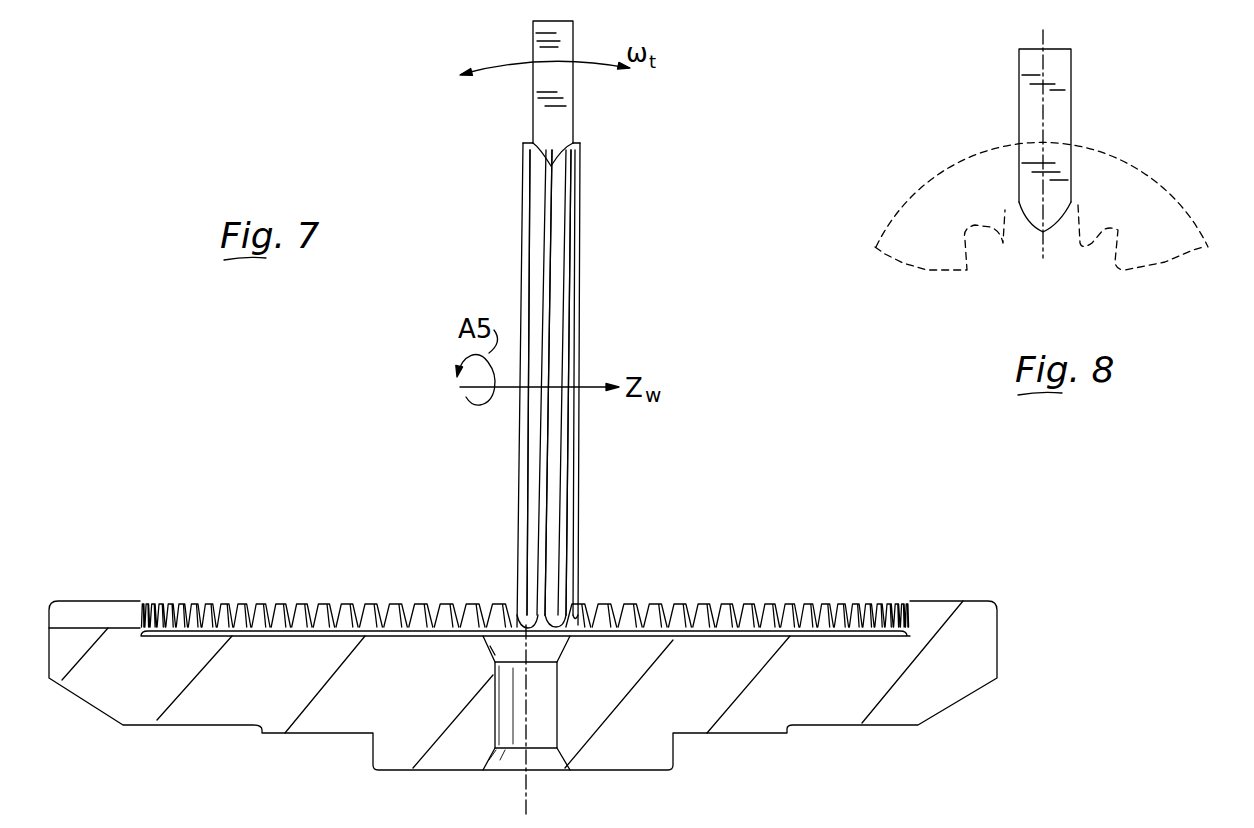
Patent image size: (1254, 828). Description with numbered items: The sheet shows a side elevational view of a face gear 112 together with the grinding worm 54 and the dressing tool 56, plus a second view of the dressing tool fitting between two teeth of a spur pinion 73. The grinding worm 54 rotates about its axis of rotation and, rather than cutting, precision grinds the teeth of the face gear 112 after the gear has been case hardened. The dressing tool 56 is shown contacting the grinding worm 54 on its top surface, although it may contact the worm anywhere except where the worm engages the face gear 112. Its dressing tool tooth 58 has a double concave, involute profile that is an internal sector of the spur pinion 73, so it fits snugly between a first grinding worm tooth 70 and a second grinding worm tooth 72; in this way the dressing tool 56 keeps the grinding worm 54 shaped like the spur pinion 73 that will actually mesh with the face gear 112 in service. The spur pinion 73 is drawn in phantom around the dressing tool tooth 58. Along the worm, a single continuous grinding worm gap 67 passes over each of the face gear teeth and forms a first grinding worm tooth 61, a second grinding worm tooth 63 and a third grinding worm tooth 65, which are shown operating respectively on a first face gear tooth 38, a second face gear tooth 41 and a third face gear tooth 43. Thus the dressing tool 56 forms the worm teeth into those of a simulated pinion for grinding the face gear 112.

In FIG. 7, the grinding worm 54 is at (552, 324).
In FIG. 7, the dressing tool 56 is at (574, 117).
In FIG. 8, the dressing tool 56 is at (1073, 116).
In FIG. 7, the dressing tool tooth 58 is at (550, 158).
In FIG. 8, the dressing tool tooth 58 is at (1044, 218).
In FIG. 7, the first grinding worm tooth 70 is at (530, 143).
In FIG. 7, the second grinding worm tooth 72 is at (575, 143).
In FIG. 7, the single continuous grinding worm gap 67 is at (535, 457).
In FIG. 7, the second grinding worm tooth 63 is at (547, 605).
In FIG. 7, the third grinding worm tooth 65 is at (576, 602).
In FIG. 7, the first grinding worm tooth 61 is at (513, 602).
In FIG. 7, the third face gear tooth 43 is at (582, 600).
In FIG. 7, the first face gear tooth 38 is at (492, 645).
In FIG. 7, the second face gear tooth 41 is at (542, 637).
In FIG. 7, the face gear 112 is at (792, 697).
In FIG. 8, the spur pinion 73 is at (1086, 279).